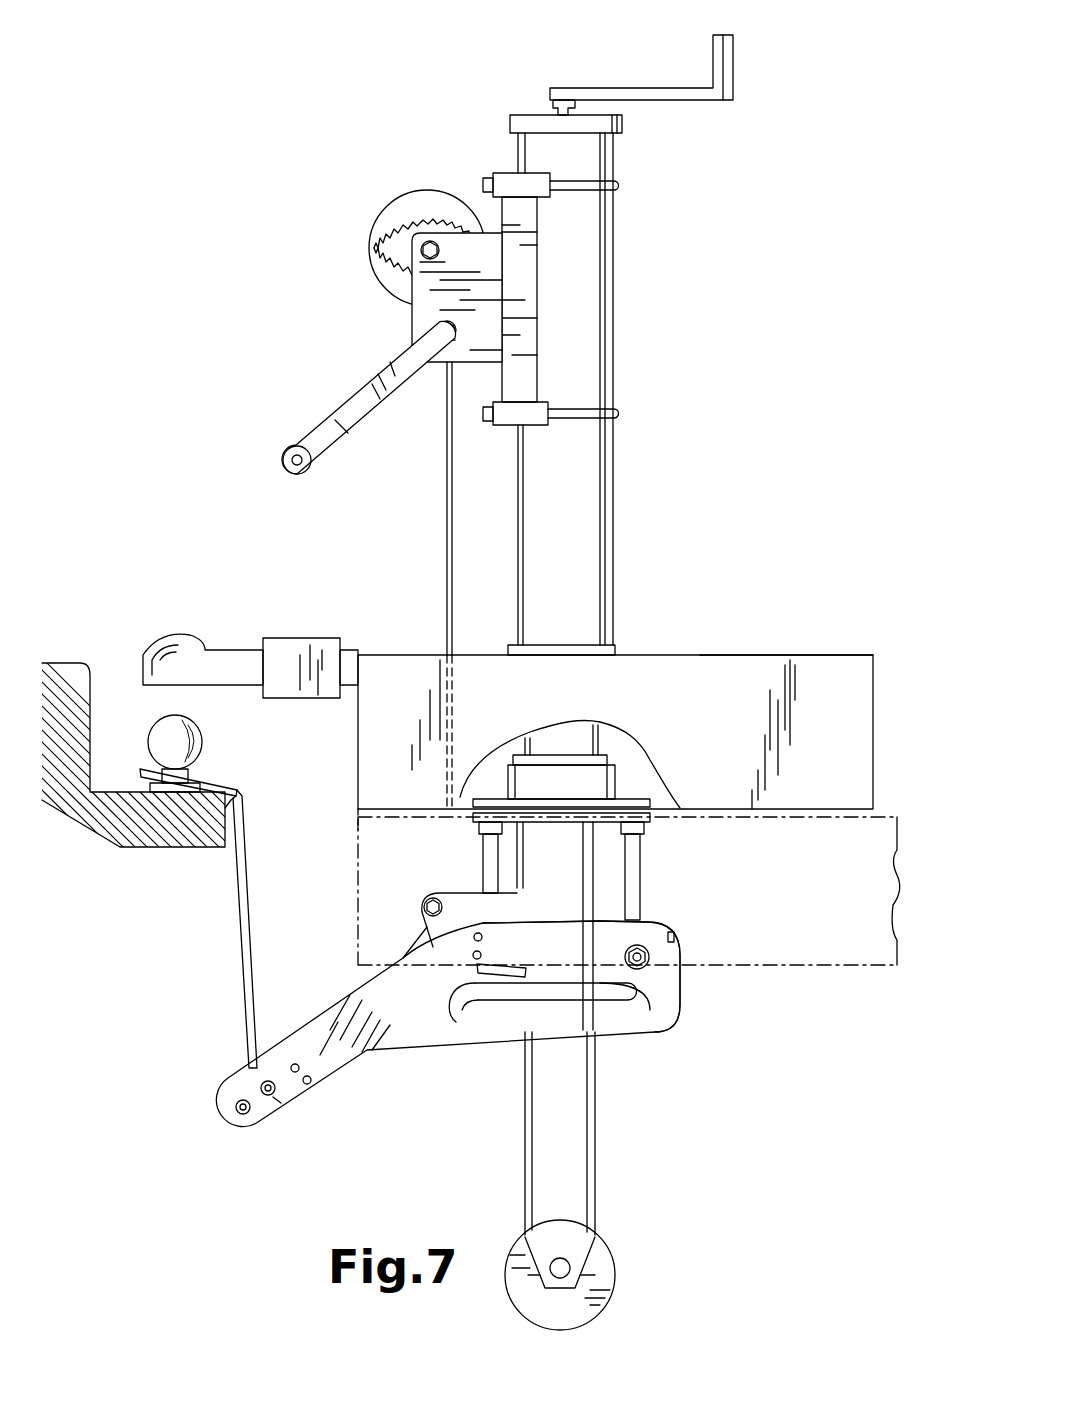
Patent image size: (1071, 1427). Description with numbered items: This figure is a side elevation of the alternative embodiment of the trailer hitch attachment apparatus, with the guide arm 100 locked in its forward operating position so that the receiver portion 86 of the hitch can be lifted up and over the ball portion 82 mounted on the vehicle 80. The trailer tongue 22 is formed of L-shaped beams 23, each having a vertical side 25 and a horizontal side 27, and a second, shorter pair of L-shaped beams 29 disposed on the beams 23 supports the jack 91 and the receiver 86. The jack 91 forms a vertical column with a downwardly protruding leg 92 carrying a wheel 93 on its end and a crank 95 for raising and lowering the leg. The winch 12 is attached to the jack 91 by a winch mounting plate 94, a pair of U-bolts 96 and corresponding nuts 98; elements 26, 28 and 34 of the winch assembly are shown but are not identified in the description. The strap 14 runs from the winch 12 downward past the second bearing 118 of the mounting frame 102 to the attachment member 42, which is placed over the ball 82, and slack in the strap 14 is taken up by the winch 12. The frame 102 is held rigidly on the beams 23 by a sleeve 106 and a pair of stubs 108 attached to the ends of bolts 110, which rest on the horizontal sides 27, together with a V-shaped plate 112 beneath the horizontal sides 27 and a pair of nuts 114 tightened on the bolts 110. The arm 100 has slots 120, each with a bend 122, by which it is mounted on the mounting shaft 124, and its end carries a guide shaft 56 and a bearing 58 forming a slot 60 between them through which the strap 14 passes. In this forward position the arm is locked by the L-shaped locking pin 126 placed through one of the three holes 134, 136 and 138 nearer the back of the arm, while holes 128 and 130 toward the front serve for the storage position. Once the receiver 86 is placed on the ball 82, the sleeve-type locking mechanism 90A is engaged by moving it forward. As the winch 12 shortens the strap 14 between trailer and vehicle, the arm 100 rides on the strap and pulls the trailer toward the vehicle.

The winch 12 is at (412, 172).
The strap 14 is at (243, 958).
The tongue 22 is at (792, 616).
The L-shaped beams 23 is at (834, 992).
The vertical side 25 is at (358, 840).
The ratchet gear 26 is at (388, 213).
The horizontal side 27 is at (398, 803).
The pivot bolt 28 is at (412, 324).
The second pair of L-shaped beams 29 is at (855, 655).
The crank handle 34 is at (380, 364).
The attachment member 42 is at (148, 773).
The guide shaft 56 is at (255, 1122).
The bearing 58 is at (280, 1108).
The slot 60 is at (270, 1100).
The vehicle 80 is at (88, 670).
The ball portion 82 is at (204, 740).
The receiver portion 86 is at (172, 608).
The sleeve-type locking mechanism 90A is at (305, 638).
The jack 91 is at (613, 308).
The leg 92 is at (596, 1152).
The wheel 93 is at (616, 1266).
The winch mounting plate 94 is at (537, 272).
The crank 95 is at (645, 88).
The U-bolts 96 is at (620, 186).
The nuts 98 is at (493, 182).
The guide arm 100 is at (405, 1068).
The frame 102 is at (618, 1034).
The sleeve 106 is at (603, 757).
The stubs 108 is at (482, 760).
The bolts 110 is at (483, 870).
The V-shaped plate 112 is at (473, 805).
The nuts 114 is at (502, 830).
The second bearing 118 is at (410, 905).
The slots 120 is at (575, 1036).
The bend 122 is at (655, 996).
The mounting shaft 124 is at (650, 942).
The locking pin 126 is at (498, 986).
The hole 128 is at (293, 1062).
The hole 130 is at (312, 1083).
The hole 134 is at (484, 934).
The hole 136 is at (483, 953).
The hole 138 is at (462, 969).